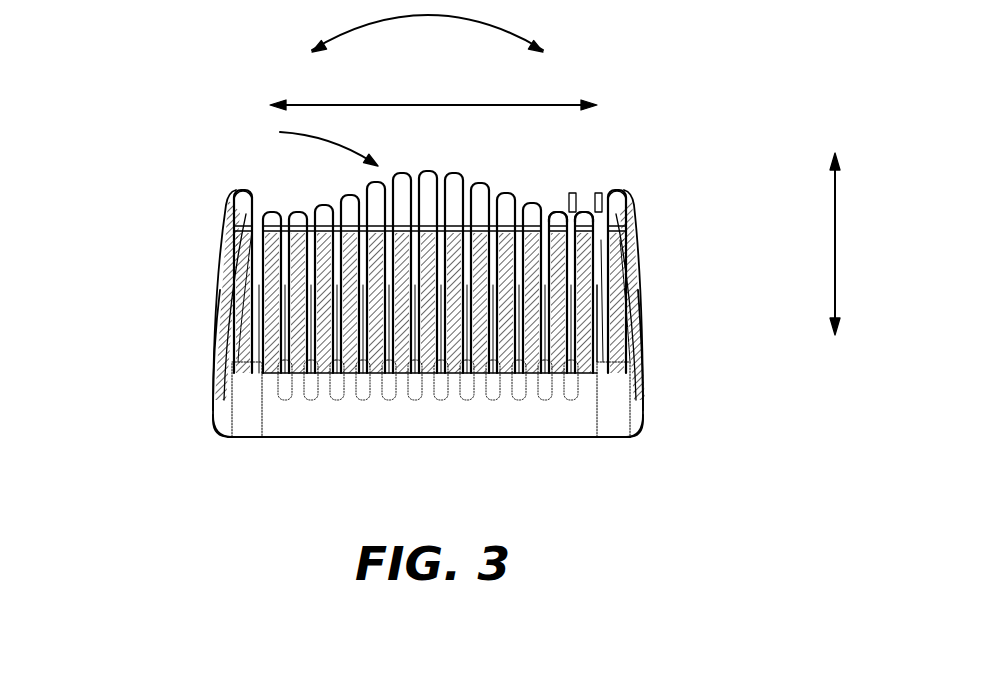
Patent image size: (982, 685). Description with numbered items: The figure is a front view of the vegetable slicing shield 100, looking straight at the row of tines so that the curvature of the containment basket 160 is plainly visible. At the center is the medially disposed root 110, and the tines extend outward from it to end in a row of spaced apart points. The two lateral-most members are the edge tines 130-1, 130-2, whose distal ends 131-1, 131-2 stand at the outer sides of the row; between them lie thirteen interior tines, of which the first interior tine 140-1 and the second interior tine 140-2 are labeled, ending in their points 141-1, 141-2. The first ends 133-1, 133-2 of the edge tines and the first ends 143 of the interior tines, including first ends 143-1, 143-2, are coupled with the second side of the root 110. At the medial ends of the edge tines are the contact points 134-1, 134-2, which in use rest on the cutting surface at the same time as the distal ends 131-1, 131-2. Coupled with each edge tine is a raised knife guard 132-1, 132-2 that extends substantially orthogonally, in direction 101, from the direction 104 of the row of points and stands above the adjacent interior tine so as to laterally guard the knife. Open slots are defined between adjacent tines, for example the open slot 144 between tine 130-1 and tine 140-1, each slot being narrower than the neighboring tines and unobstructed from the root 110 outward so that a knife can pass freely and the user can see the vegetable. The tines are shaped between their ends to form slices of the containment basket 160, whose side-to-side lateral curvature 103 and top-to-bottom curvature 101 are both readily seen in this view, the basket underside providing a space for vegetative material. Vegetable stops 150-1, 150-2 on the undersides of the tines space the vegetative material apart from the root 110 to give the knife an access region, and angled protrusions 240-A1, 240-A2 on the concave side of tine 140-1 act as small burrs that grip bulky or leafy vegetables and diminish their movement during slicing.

The vegetable slicing shield 100 is at (725, 31).
The top-to-bottom curvature direction 101 is at (833, 270).
The lateral curvature direction 103 is at (430, 16).
The direction of the row of points 104 is at (347, 100).
The root 110 is at (375, 422).
The first edge tine 130-1 is at (612, 330).
The second edge tine 130-2 is at (248, 262).
The distal end of first edge tine 131-1 is at (608, 224).
The distal end of second edge tine 131-2 is at (250, 213).
The raised knife guard 132-1 is at (604, 200).
The raised knife guard 132-2 is at (242, 200).
The first end of first edge tine 133-1 is at (637, 417).
The first end of second edge tine 133-2 is at (227, 430).
The contact point 134-1 is at (642, 397).
The contact point 134-2 is at (218, 394).
The first interior tine 140-1 is at (582, 288).
The second interior tine 140-2 is at (584, 300).
The point of first interior tine 141-1 is at (588, 208).
The point of second interior tine 141-2 is at (554, 210).
The first ends of interior tines 143 is at (566, 210).
The open slot 144 is at (600, 208).
The first end of first interior tine 143-1 is at (592, 400).
The first end of second interior tine 143-2 is at (568, 398).
The vegetable stop 150-1 is at (582, 318).
The vegetable stop 150-2 is at (616, 331).
The containment basket 160 is at (307, 145).
The angled protrusion 240-A1 is at (586, 276).
The angled protrusion 240-A2 is at (588, 256).